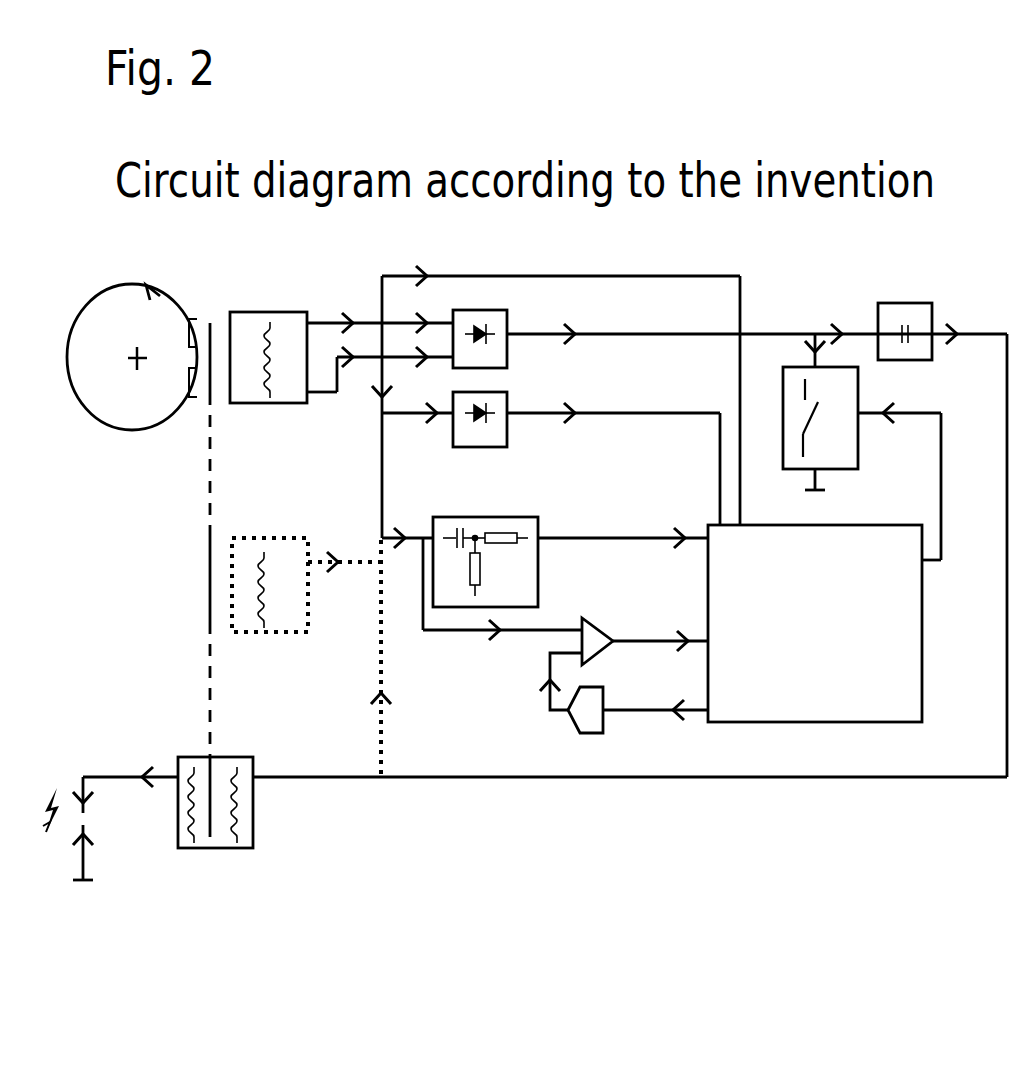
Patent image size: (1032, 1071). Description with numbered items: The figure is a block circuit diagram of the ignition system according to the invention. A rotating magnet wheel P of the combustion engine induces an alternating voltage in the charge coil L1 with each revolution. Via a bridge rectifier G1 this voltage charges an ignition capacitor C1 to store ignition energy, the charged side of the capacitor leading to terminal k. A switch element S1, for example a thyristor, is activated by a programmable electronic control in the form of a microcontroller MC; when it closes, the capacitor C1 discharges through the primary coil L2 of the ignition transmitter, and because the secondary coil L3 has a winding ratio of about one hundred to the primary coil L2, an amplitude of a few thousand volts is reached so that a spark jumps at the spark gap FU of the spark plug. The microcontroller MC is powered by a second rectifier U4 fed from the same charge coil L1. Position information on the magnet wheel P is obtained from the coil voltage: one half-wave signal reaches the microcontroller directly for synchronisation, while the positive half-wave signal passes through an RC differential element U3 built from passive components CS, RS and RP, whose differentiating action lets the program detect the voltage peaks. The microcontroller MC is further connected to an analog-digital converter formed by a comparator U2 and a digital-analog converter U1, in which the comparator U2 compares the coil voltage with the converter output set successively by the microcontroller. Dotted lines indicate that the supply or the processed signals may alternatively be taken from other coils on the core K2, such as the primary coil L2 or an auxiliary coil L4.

The magnet wheel P is at (132, 357).
The charge coil L1 is at (268, 338).
The bridge rectifier G1 is at (507, 334).
The second rectifier U4 is at (507, 412).
The ignition capacitor C1 is at (907, 308).
The terminal k is at (1002, 322).
The switch element S1 is at (842, 428).
The microcontroller MC is at (815, 623).
The RC differential element U3 is at (515, 561).
The series capacitor CS is at (445, 556).
The series resistor RS is at (501, 529).
The parallel resistor RP is at (487, 569).
The comparator U2 is at (618, 631).
The digital-analog converter U1 is at (622, 698).
The auxiliary coil L4 is at (311, 648).
The core K2 is at (190, 580).
The secondary coil L3 is at (207, 784).
The primary coil L2 is at (242, 782).
The ignition spark / spark gap FU is at (115, 843).